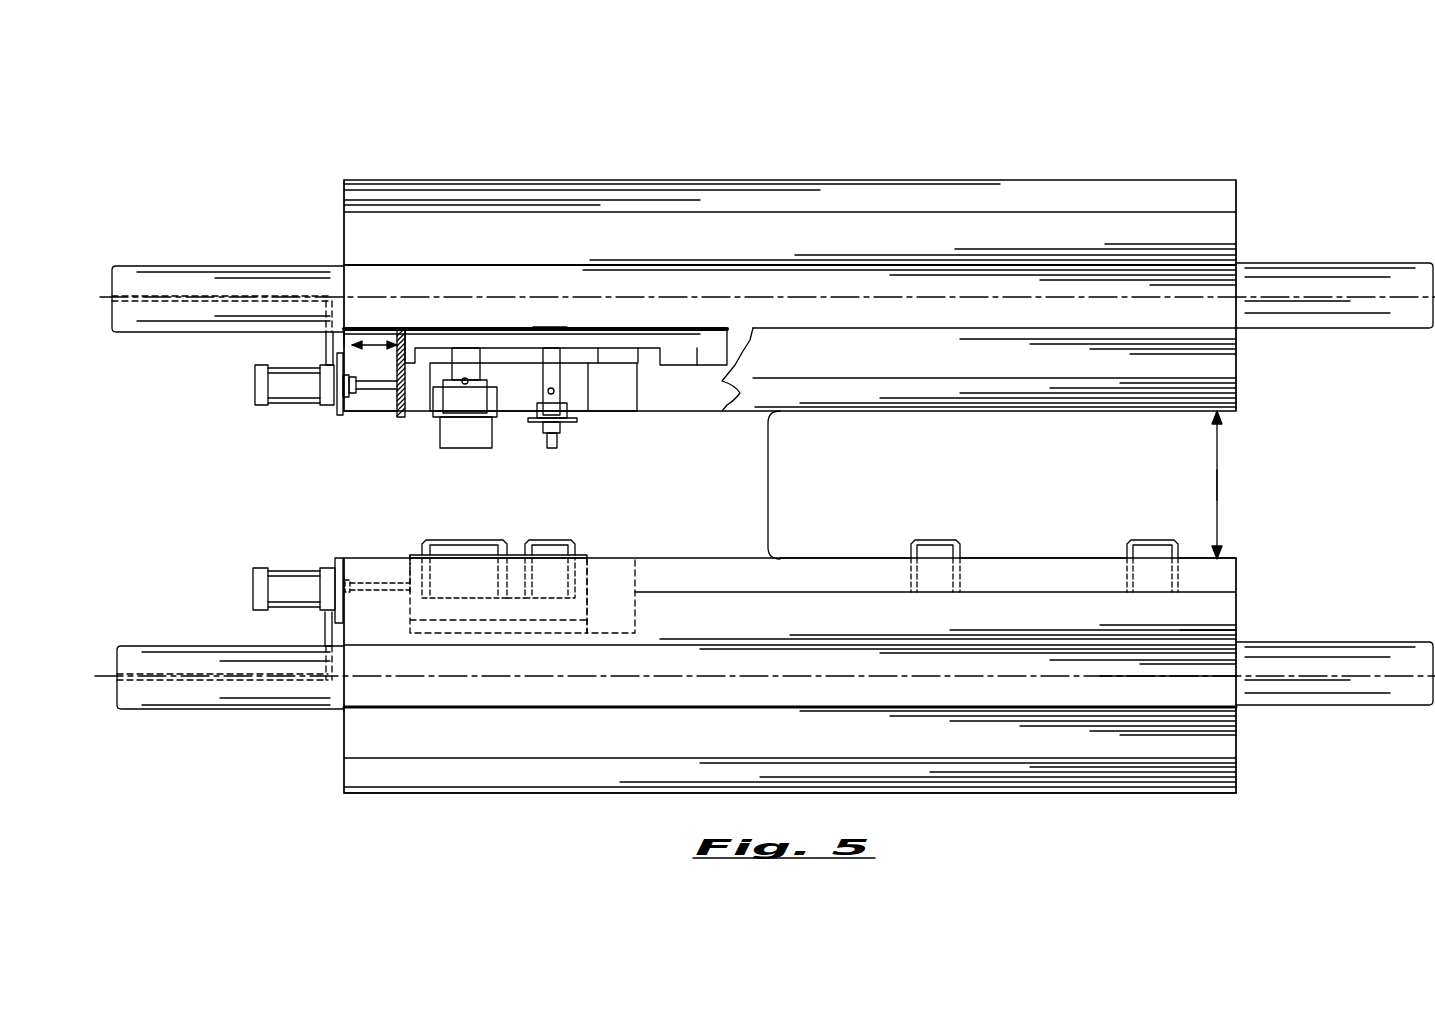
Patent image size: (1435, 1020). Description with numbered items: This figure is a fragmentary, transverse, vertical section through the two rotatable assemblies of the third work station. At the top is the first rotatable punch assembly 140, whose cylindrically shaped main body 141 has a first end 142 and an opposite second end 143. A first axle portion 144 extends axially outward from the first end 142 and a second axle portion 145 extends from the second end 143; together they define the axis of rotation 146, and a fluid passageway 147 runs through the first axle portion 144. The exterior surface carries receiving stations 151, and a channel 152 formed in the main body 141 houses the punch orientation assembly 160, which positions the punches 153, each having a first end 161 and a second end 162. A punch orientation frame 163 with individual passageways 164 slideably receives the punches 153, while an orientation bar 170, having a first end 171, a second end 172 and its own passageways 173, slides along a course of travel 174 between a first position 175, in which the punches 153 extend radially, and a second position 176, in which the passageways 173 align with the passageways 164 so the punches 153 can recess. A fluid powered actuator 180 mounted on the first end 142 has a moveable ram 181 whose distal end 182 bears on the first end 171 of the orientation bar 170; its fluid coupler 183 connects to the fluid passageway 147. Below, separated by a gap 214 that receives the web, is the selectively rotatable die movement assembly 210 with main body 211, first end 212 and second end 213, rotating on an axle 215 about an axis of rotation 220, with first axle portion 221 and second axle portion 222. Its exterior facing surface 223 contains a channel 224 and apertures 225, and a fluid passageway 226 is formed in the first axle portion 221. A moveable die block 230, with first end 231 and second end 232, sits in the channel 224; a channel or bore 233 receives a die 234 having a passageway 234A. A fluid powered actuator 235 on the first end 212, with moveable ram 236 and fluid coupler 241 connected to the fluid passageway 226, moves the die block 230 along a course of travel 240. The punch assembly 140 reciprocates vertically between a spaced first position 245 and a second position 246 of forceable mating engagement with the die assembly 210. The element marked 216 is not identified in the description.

The first rotatable punch assembly 140 is at (1092, 146).
The main body 141 is at (881, 179).
The first end 142 is at (345, 208).
The second end 143 is at (1238, 203).
The first axle portion 144 is at (173, 278).
The second axle portion 145 is at (1323, 272).
The axis of rotation 146 is at (103, 300).
The fluid passageway 147 is at (222, 303).
The receiving stations 151 is at (565, 423).
The channel 152 is at (723, 382).
The punches 153 is at (560, 446).
The punch orientation assembly 160 is at (407, 425).
The first end 161 is at (553, 450).
The second end 162 is at (472, 365).
The punch orientation frame 163 is at (613, 346).
The passageways 164 is at (560, 393).
The orientation bar 170 is at (638, 340).
The first end 171 is at (412, 338).
The second end 172 is at (697, 347).
The passageways 173 is at (567, 325).
The course of travel 174 is at (392, 340).
The first position 175 is at (408, 342).
The second position 176 is at (363, 340).
The fluid powered actuator 180 is at (295, 393).
The moveable ram 181 is at (370, 385).
The distal end 182 is at (408, 387).
The fluid coupler 183 is at (326, 348).
The selectively rotatable die movement assembly 210 is at (1085, 492).
The main body 211 is at (993, 570).
The first end 212 is at (338, 747).
The second end 213 is at (1236, 595).
The gap 214 is at (768, 483).
The axle 215 is at (1128, 676).
The channel 216 is at (1190, 630).
The axis of rotation 220 is at (103, 680).
The first axle portion 221 is at (200, 698).
The second axle portion 222 is at (1303, 685).
The exterior facing surface 223 is at (797, 557).
The channel 224 is at (633, 583).
The apertures 225 is at (908, 555).
The fluid passageway 226 is at (178, 672).
The moveable die block 230 is at (437, 630).
The first end 231 is at (410, 637).
The second end 232 is at (589, 610).
The channel or bore 233 is at (580, 568).
The die 234 is at (540, 540).
The passageway 234A is at (562, 575).
The fluid powered actuator 235 is at (285, 582).
The moveable ram 236 is at (398, 555).
The course of travel 240 is at (1219, 484).
The fluid coupler 241 is at (323, 633).
The first position 245 is at (1221, 437).
The second position 246 is at (1220, 531).